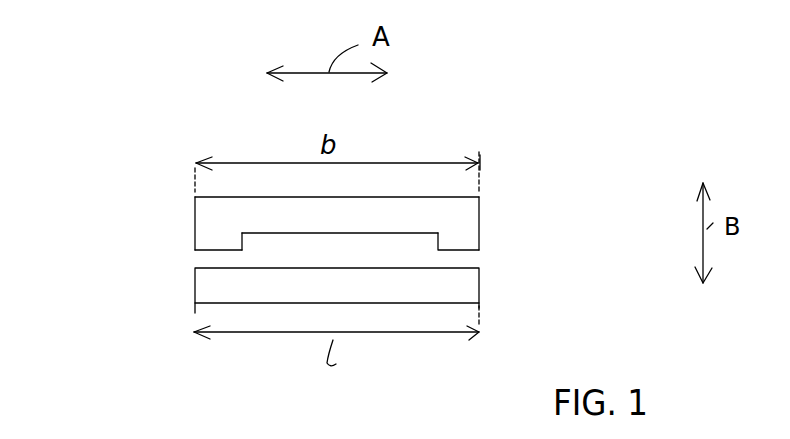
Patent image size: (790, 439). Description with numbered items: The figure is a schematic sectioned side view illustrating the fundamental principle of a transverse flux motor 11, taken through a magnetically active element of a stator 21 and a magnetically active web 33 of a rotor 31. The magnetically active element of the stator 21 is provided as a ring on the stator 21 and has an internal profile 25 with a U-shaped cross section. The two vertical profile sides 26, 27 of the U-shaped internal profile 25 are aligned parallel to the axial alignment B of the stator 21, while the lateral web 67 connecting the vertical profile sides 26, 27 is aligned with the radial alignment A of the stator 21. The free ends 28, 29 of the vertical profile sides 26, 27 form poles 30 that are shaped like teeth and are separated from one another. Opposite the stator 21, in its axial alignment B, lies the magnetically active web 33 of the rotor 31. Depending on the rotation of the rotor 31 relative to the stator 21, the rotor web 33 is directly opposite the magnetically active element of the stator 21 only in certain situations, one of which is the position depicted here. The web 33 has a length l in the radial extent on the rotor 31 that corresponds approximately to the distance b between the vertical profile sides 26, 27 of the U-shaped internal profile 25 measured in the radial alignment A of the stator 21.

The transverse flux motor 11 is at (507, 105).
The stator 21 is at (483, 215).
The lateral web 67 is at (380, 210).
The vertical profile side 26 is at (210, 218).
The vertical profile side 27 is at (460, 228).
The free end 29 is at (470, 250).
The poles 30 is at (202, 243).
The free end 28 is at (212, 250).
The internal profile 25 is at (320, 240).
The rotor 31 is at (482, 283).
The magnetically active web 33 is at (463, 293).